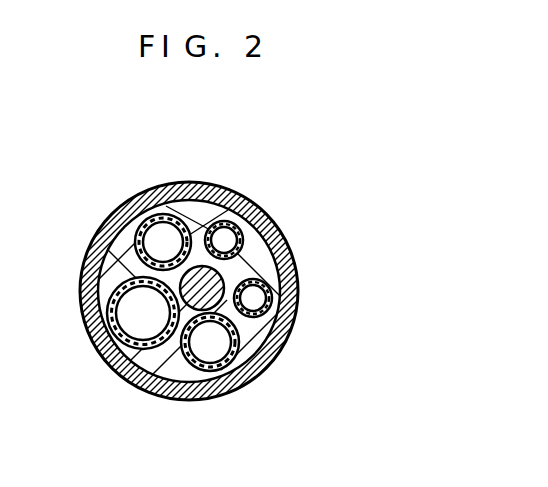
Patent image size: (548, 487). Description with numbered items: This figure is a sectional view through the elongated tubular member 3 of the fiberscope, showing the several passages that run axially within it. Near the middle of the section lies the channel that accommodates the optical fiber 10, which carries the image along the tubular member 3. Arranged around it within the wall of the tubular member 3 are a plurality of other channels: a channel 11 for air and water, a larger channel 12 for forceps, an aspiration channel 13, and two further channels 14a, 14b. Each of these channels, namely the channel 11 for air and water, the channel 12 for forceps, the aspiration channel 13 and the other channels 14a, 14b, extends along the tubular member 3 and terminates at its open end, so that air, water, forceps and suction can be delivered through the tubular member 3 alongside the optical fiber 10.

The tubular member 3 is at (290, 329).
The optical fiber 10 is at (212, 297).
The channel for air and water 11 is at (224, 240).
The channel for forceps 12 is at (137, 320).
The aspiration channel 13 is at (253, 298).
The channel 14a is at (162, 242).
The channel 14b is at (210, 347).